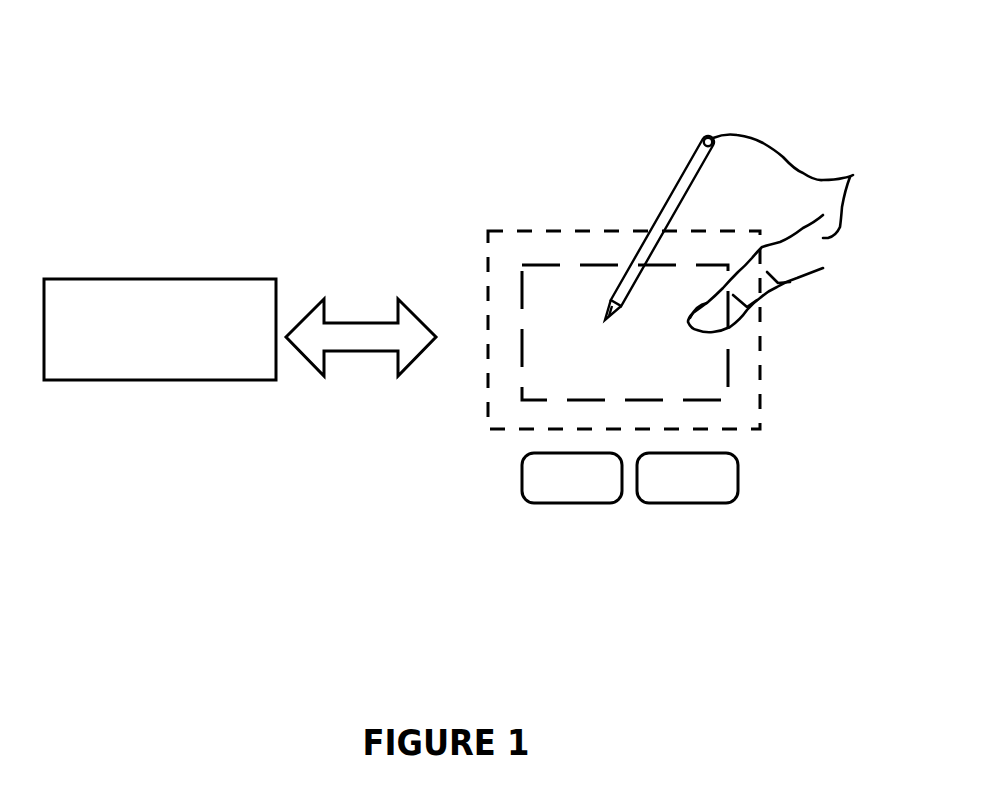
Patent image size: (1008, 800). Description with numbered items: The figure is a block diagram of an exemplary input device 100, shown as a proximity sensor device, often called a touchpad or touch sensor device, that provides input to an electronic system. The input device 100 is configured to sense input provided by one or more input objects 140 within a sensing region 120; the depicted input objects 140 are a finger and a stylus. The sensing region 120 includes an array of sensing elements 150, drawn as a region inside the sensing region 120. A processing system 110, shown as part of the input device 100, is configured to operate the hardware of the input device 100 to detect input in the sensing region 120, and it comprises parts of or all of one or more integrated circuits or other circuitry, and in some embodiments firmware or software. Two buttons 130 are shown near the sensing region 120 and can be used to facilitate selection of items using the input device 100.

The input device 100 is at (381, 118).
The processing system 110 is at (237, 279).
The sensing region 120 is at (760, 352).
The buttons 130 is at (565, 503).
The input objects 140 is at (853, 175).
The sensing elements 150 is at (580, 265).